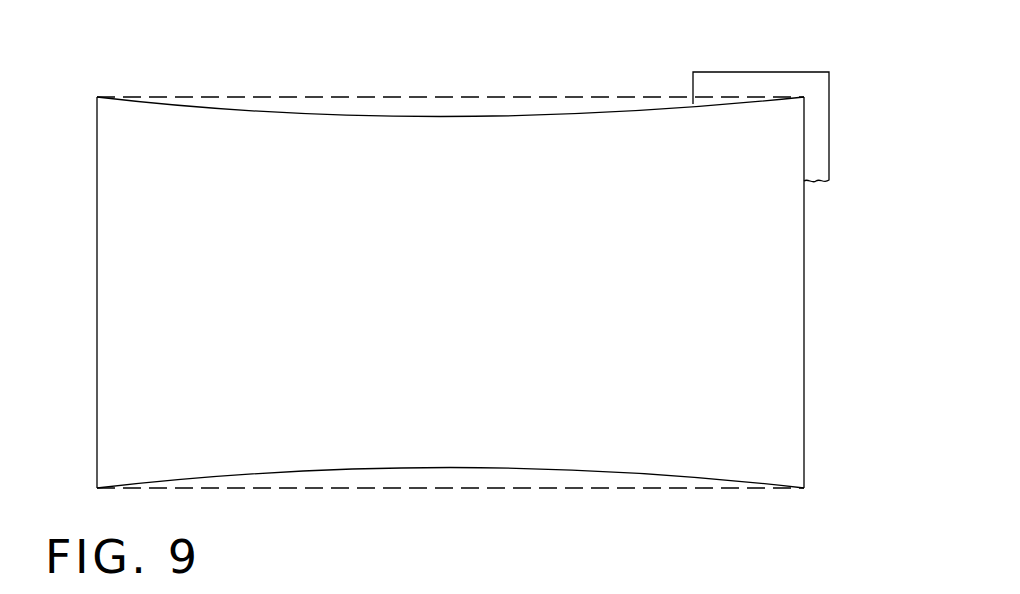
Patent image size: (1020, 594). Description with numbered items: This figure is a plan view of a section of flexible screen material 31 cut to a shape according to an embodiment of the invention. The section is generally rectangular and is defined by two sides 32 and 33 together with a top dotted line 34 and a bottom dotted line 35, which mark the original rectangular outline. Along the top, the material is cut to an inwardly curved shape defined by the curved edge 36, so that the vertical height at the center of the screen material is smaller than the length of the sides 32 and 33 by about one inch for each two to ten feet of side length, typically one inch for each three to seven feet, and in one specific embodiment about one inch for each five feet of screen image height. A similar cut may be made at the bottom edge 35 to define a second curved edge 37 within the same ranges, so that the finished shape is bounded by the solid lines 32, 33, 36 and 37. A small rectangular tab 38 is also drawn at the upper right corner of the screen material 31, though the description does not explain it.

The flexible screen material 31 is at (680, 229).
The side 32 is at (97, 318).
The side 33 is at (805, 285).
The top dotted line 34 is at (496, 97).
The bottom dotted line 35 is at (520, 489).
The curved edge 36 is at (434, 116).
The curved edge 37 is at (450, 468).
The tab 38 is at (831, 107).